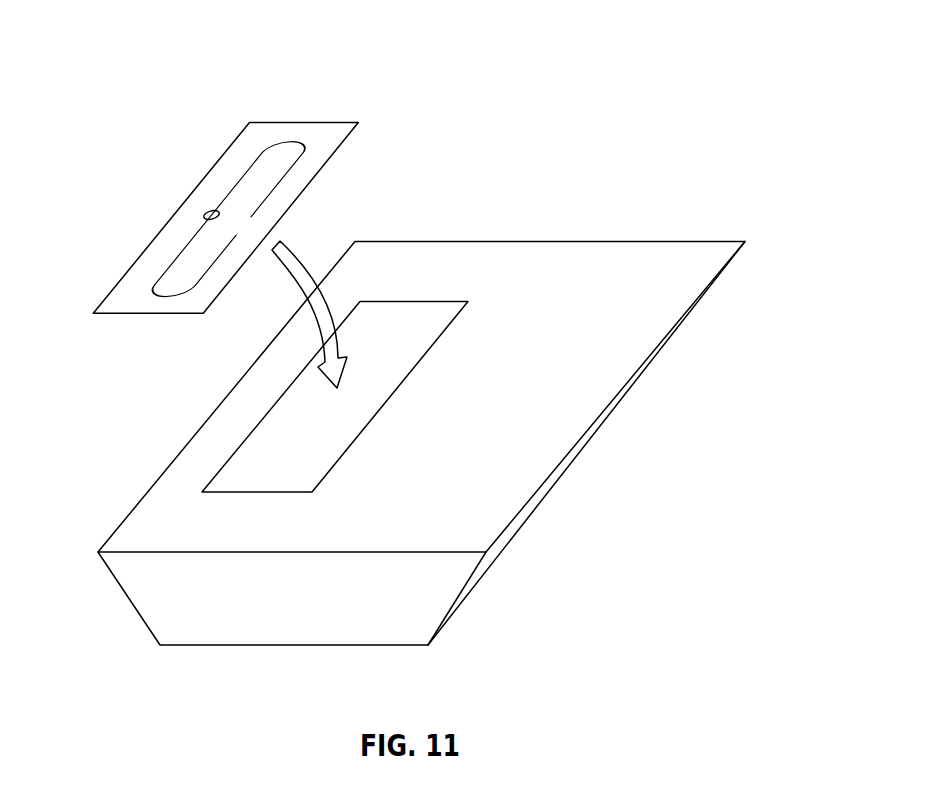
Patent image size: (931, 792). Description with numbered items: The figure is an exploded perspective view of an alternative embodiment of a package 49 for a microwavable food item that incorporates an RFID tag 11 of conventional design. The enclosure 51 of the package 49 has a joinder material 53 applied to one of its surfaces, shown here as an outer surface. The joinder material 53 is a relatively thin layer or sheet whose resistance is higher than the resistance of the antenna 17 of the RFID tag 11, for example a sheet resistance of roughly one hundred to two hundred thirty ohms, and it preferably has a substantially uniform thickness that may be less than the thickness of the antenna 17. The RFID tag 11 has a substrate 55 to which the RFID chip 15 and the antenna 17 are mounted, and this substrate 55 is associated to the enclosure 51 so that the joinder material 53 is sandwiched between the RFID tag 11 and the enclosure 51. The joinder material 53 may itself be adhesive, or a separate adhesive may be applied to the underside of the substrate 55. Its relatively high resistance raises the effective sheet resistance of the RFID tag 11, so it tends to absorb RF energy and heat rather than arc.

The RFID tag 11 is at (331, 90).
The RFID chip 15 is at (206, 210).
The antenna 17 is at (157, 278).
The substrate 55 is at (327, 142).
The package 49 is at (552, 188).
The enclosure 51 is at (565, 468).
The joinder material 53 is at (270, 477).